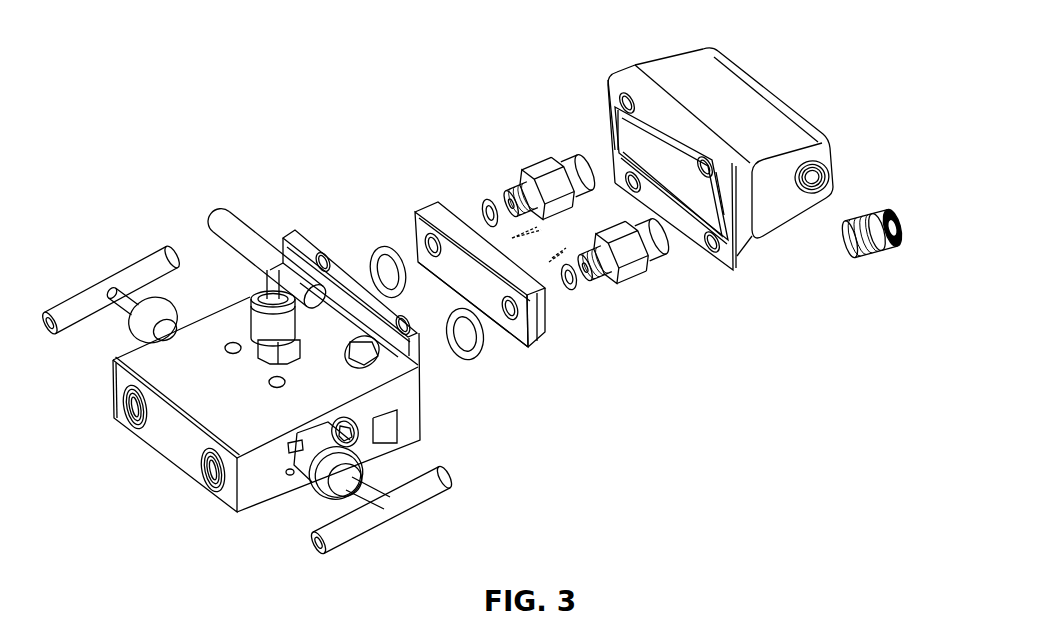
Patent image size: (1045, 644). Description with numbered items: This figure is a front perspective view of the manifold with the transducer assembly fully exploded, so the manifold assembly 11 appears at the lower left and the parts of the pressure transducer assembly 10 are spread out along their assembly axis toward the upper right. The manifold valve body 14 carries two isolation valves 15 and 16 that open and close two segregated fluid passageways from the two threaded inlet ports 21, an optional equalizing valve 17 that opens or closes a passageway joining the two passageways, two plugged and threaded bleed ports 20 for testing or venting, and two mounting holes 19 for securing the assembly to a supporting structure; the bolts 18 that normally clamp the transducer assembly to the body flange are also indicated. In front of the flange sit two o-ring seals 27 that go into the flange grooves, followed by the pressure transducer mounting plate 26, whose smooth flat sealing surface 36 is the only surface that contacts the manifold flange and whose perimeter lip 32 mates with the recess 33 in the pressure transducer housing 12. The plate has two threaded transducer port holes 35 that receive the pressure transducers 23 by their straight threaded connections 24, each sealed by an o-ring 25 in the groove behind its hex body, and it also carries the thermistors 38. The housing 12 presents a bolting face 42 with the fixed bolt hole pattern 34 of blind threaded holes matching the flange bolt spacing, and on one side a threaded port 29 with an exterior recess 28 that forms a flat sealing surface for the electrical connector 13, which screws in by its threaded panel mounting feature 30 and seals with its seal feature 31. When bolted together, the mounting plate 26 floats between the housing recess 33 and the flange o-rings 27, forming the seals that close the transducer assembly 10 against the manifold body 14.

The pressure transducer assembly 10 is at (685, 397).
The manifold assembly 11 is at (277, 218).
The pressure transducer housing 12 is at (707, 188).
The electrical connector 13 is at (866, 227).
The manifold valve body 14 is at (177, 443).
The isolation valve 15 is at (390, 526).
The isolation valve 16 is at (112, 277).
The equalizing valve 17 is at (258, 230).
The bolts 18 is at (420, 440).
The mounting holes 19 is at (268, 382).
The bleed ports 20 is at (345, 448).
The inlet ports 21 is at (133, 424).
The pressure transducer 23 is at (541, 242).
The straight threaded connection 24 is at (520, 192).
The o-ring 25 is at (482, 208).
The pressure transducer mounting plate 26 is at (423, 232).
The o-ring seals 27 is at (372, 262).
The recess 28 is at (834, 170).
The threaded port 29 is at (818, 200).
The threaded panel mounting feature 30 is at (867, 207).
The seal feature 31 is at (853, 237).
The lip 32 is at (544, 330).
The recess 33 is at (683, 215).
The bolt hole pattern 34 is at (620, 177).
The threaded transducer port holes 35 is at (420, 246).
The sealing surface 36 is at (482, 275).
The thermistor 38 is at (511, 236).
The bolting face 42 is at (610, 88).